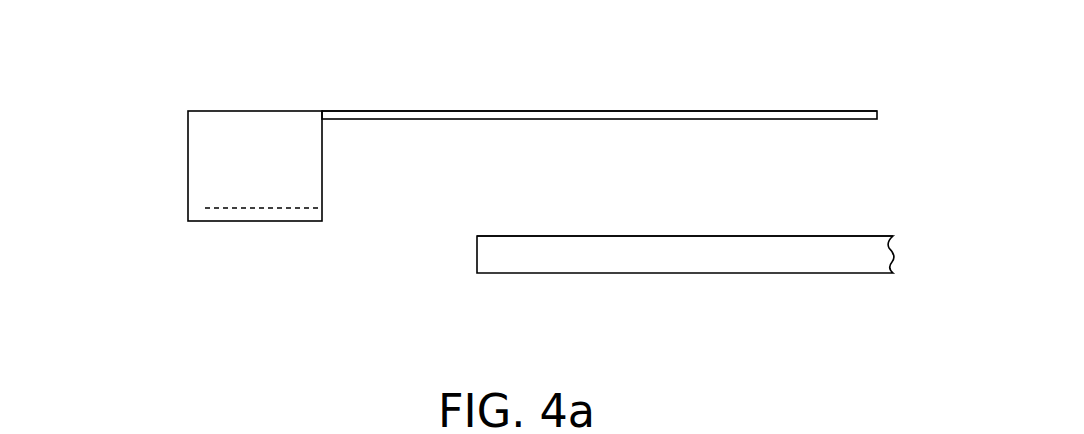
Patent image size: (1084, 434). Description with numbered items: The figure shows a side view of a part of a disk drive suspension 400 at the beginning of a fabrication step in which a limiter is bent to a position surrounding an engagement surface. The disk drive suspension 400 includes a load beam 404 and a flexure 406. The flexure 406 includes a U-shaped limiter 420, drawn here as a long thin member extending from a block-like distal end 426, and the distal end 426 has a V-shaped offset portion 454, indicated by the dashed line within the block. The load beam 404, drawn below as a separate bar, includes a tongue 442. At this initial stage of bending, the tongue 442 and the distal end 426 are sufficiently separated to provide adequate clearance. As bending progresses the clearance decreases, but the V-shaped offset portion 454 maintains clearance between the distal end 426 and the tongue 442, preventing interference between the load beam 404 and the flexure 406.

The disk drive suspension 400 is at (300, 292).
The load beam 404 is at (785, 255).
The flexure 406 is at (719, 117).
The U-shaped limiter 420 is at (359, 111).
The distal end 426 is at (216, 78).
The tongue 442 is at (520, 255).
The V-shaped offset portion 454 is at (217, 170).